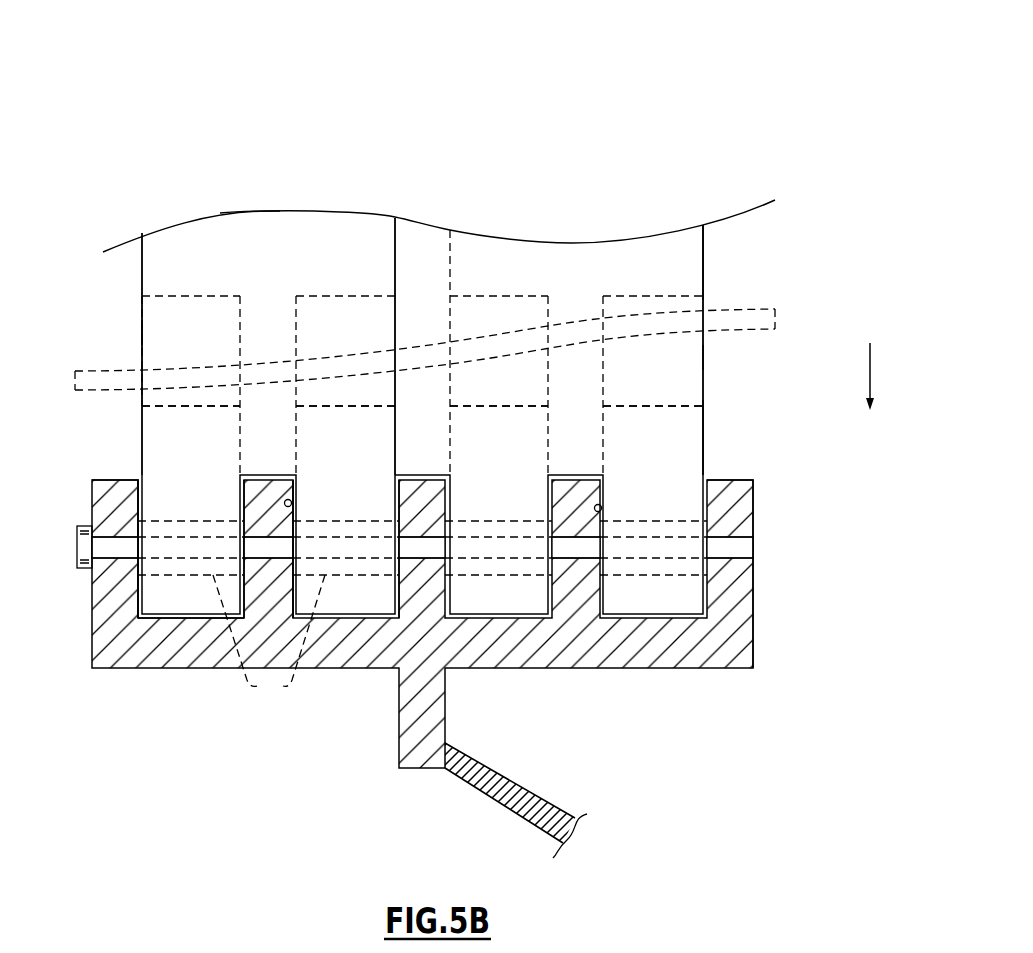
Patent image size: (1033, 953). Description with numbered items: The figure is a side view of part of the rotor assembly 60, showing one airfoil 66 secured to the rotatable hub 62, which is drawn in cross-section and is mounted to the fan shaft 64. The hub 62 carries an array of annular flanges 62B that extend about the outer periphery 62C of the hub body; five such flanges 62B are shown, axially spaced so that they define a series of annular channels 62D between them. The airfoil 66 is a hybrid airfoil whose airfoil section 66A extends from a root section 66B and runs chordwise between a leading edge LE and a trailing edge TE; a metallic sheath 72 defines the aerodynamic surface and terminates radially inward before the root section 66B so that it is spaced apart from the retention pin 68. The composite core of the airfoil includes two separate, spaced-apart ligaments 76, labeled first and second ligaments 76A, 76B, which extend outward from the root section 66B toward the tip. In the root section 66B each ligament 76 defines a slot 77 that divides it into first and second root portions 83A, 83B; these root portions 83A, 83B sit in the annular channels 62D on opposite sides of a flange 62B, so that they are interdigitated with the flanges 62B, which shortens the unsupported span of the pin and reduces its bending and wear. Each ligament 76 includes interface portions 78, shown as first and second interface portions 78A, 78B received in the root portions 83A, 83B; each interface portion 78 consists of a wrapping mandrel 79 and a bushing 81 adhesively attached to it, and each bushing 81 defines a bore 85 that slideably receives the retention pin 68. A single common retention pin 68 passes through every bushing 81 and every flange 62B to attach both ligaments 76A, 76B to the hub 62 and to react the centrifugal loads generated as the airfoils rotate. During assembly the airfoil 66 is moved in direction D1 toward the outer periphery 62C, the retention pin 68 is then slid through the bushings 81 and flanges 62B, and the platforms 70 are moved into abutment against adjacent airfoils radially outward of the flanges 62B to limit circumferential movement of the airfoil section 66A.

The rotor assembly 60 is at (108, 60).
The rotatable hub 62 is at (83, 627).
The annular flanges 62B is at (107, 480).
The outer periphery 62C is at (145, 616).
The annular channels 62D is at (199, 607).
The fan shaft 64 is at (505, 778).
The airfoil 66 is at (170, 215).
The airfoil section 66A is at (712, 248).
The root section 66B is at (712, 433).
The retention pin 68 is at (105, 537).
The platform 70 is at (762, 310).
The metallic sheath 72 is at (263, 228).
The ligament 76 is at (450, 247).
The first ligament 76A is at (338, 228).
The second ligament 76B is at (663, 248).
The slot 77 is at (292, 508).
The interface portion 78 is at (157, 296).
The first interface portion 78A is at (200, 296).
The second interface portion 78B is at (338, 296).
The wrapping mandrel 79 is at (157, 407).
The bushing 81 is at (269, 637).
The first root portion 83A is at (192, 608).
The second root portion 83B is at (352, 612).
The bore 85 is at (171, 537).
The leading edge LE is at (142, 328).
The trailing edge TE is at (703, 358).
The direction D1 is at (873, 365).